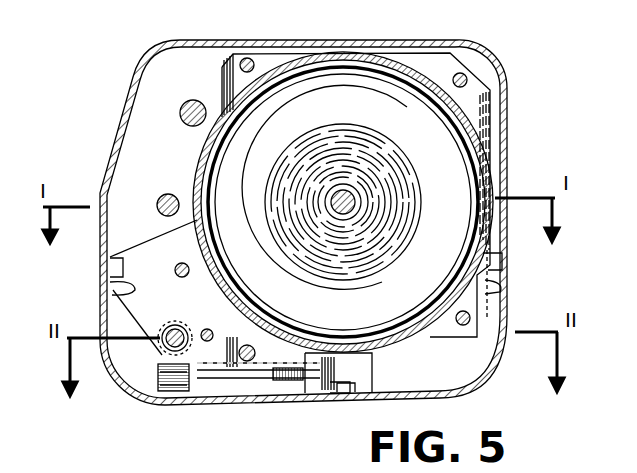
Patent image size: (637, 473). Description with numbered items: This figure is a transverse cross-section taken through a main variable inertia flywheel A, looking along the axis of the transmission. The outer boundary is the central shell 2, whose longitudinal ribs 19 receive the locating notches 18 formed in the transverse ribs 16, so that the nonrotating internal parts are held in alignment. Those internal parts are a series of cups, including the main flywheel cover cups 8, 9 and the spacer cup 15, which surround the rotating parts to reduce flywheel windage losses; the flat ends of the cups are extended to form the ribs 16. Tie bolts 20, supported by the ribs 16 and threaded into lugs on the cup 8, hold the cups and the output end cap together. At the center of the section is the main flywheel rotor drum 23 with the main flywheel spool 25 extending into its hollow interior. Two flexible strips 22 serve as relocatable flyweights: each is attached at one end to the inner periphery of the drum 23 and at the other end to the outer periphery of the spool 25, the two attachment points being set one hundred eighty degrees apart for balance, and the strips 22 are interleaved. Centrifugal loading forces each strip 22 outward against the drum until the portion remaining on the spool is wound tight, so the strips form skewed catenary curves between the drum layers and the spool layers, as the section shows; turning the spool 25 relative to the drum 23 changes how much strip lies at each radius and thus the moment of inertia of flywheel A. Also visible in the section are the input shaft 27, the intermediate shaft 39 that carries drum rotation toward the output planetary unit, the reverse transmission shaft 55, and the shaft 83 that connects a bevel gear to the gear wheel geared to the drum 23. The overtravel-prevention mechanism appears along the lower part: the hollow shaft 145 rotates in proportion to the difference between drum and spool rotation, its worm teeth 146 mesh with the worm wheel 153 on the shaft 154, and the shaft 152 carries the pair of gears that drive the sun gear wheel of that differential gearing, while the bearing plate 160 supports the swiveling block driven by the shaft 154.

The central shell 2 is at (143, 65).
The main flywheel cover cup 8 is at (473, 112).
The main flywheel cover cup 9 is at (343, 240).
The spacer cup 15 is at (327, 391).
The transverse ribs 16 is at (222, 87).
The locating notches 18 is at (112, 294).
The longitudinal ribs 19 is at (107, 256).
The tie bolts 20 is at (247, 57).
The flexible strip flyweight 22 is at (406, 108).
The main flywheel rotor drum 23 is at (508, 178).
The main flywheel spool 25 is at (363, 210).
The input shaft 27 is at (160, 197).
The intermediate shaft 39 is at (350, 192).
The reverse transmission shaft 55 is at (181, 106).
The shaft 83 is at (170, 323).
The hollow shaft 145 is at (153, 378).
The worm teeth 146 is at (160, 366).
The shaft 152 is at (207, 330).
The worm wheel 153 is at (148, 405).
The shaft 154 is at (197, 393).
The bearing plate 160 is at (270, 382).
The main variable inertia flywheel A is at (343, 67).